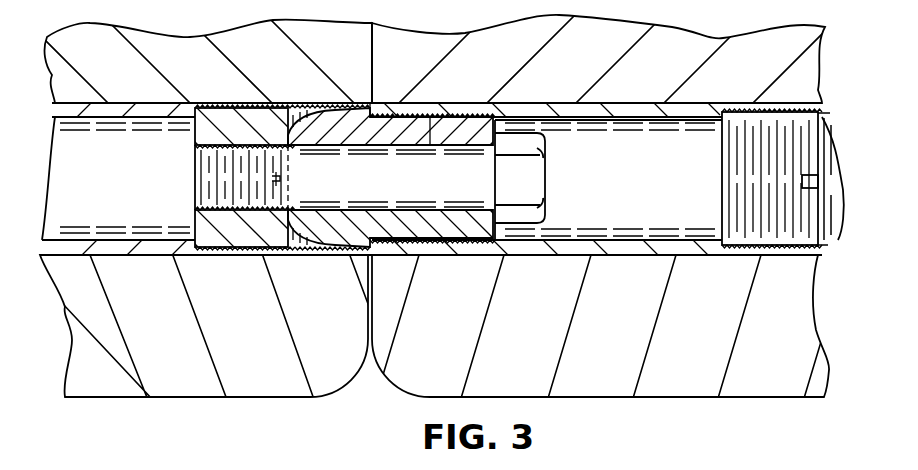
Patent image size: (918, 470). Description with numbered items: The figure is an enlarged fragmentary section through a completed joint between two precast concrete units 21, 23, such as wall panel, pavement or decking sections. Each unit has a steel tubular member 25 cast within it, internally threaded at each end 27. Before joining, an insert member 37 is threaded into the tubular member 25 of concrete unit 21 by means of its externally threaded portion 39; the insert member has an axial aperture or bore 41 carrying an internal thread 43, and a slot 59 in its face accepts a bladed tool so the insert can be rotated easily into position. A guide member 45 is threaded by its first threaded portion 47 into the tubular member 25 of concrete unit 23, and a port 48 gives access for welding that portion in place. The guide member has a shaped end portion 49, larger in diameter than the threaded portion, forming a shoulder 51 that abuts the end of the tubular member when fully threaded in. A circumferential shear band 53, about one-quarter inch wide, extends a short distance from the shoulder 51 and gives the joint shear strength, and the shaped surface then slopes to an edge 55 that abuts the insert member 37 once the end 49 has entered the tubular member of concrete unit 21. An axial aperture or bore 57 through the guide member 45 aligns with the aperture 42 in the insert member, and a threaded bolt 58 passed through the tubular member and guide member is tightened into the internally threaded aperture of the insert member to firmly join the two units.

The precast concrete unit 21 is at (254, 383).
The precast concrete unit 23 is at (603, 383).
The tubular member 25 is at (160, 103).
The end of tubular member 27 is at (820, 105).
The insert member 37 is at (225, 108).
The externally threaded portion 39 is at (290, 108).
The axial aperture or bore 41 is at (197, 162).
The aperture 42 is at (195, 186).
The internal thread 43 is at (197, 200).
The guide member 45 is at (475, 112).
The first threaded portion 47 is at (405, 112).
The port 48 is at (440, 112).
The shaped end portion 49 is at (333, 113).
The shoulder 51 is at (383, 103).
The circumferential shear band 53 is at (302, 207).
The edge 55 is at (278, 247).
The axial aperture or bore 57 is at (457, 193).
The threaded bolt 58 is at (542, 194).
The slot 59 is at (820, 186).